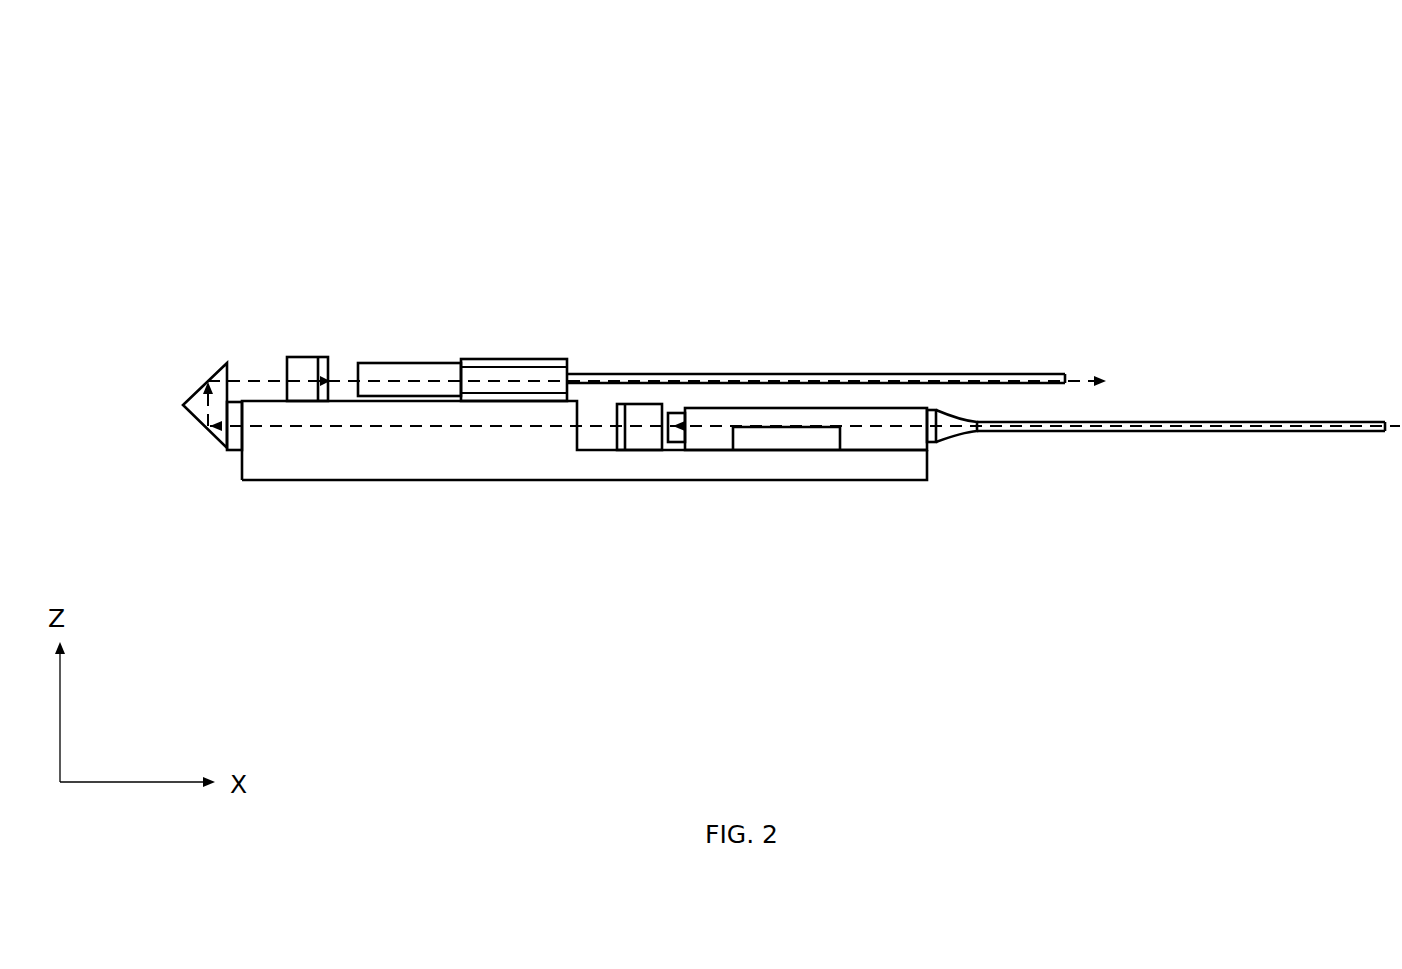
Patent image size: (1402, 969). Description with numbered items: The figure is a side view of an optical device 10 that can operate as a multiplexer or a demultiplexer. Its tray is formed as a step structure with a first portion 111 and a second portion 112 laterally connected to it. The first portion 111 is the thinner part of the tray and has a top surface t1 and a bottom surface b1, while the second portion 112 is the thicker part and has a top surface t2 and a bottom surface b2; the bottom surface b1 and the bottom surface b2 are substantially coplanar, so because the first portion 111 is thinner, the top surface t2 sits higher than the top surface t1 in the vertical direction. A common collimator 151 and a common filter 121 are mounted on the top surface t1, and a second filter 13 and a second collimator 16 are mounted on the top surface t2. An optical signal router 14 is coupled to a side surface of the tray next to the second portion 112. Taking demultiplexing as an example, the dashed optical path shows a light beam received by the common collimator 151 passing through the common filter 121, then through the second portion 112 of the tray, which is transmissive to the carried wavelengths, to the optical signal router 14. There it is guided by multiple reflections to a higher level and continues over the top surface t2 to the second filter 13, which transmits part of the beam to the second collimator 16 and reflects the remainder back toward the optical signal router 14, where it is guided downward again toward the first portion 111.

The optical device 10 is at (162, 86).
The optical signal router 14 is at (188, 386).
The second filter 13 is at (301, 355).
The top surface t2 is at (342, 398).
The second collimator 16 is at (487, 356).
The second portion 112 is at (353, 463).
The first portion 111 is at (875, 468).
The top surface t1 is at (598, 446).
The common filter 121 is at (652, 400).
The common collimator 151 is at (797, 404).
The bottom surface b2 is at (460, 485).
The bottom surface b1 is at (690, 487).